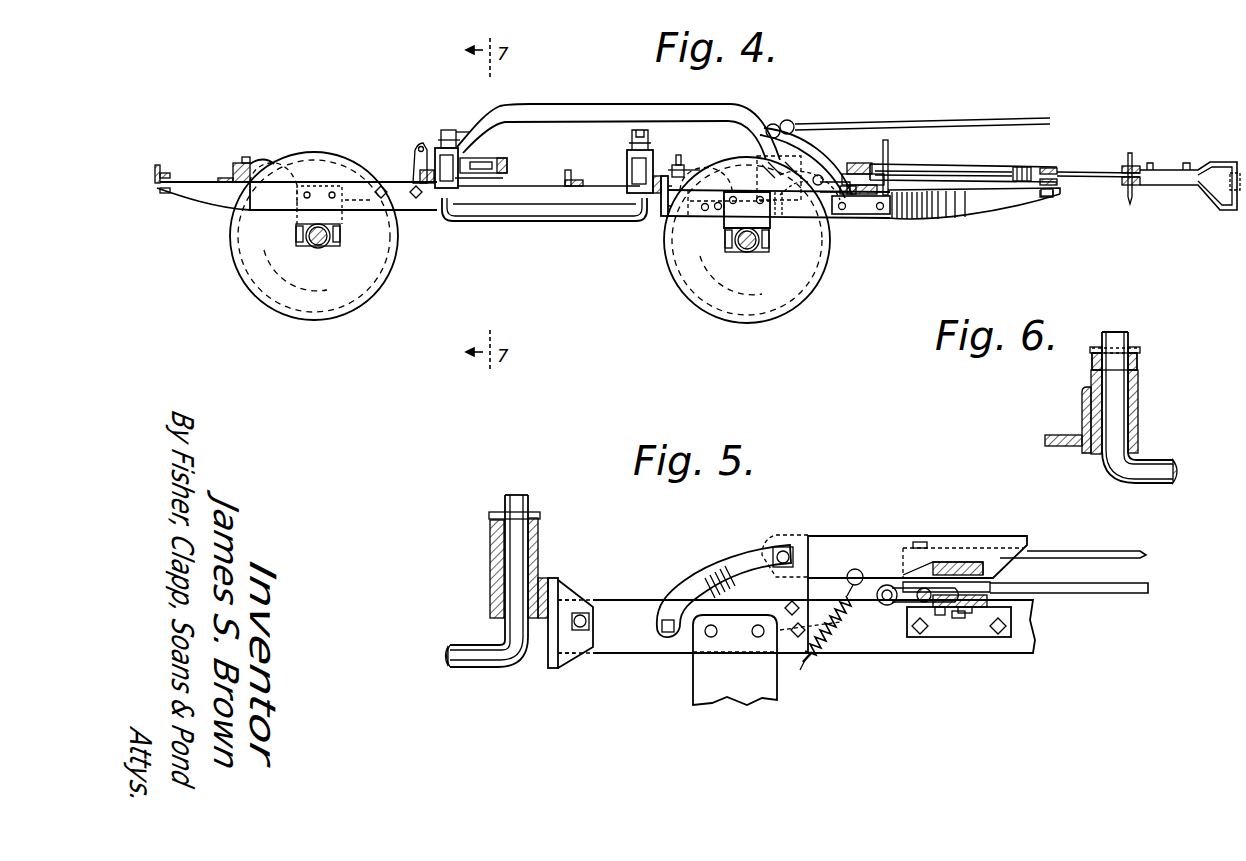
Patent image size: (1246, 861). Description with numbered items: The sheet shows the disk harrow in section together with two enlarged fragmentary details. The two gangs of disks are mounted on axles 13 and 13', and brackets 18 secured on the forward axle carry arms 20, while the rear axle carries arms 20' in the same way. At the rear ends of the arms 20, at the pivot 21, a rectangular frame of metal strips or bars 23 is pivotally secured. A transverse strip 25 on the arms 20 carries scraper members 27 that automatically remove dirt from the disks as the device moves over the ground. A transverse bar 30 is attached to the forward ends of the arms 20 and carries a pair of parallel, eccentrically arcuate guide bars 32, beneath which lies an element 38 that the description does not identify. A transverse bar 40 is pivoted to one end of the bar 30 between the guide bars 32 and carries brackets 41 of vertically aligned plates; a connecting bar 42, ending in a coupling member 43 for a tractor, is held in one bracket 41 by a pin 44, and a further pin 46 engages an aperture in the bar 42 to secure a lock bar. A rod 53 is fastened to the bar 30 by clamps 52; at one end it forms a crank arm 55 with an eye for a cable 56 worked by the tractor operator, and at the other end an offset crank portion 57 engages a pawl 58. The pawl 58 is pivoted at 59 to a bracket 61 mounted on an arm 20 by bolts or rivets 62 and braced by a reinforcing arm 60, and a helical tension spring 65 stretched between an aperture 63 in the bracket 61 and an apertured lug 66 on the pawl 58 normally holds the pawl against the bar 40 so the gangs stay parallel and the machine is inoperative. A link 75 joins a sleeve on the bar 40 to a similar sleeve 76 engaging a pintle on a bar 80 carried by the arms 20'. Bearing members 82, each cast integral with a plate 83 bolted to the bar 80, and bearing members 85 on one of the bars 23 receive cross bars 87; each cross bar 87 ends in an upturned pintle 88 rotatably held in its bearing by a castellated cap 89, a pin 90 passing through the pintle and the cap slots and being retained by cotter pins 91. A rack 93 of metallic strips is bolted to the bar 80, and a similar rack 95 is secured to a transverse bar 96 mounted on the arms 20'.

In FIG. 4, the axle 13 is at (747, 240).
In FIG. 4, the axle 13' is at (314, 236).
In FIG. 4, the brackets 18 is at (338, 214).
In FIG. 5, the arms 20 is at (796, 646).
In FIG. 4, the arms 20' is at (297, 213).
In FIG. 4, the pivot 21 is at (662, 214).
In FIG. 5, the pivot 21 is at (584, 614).
In FIG. 5, the metal strips or bars 23 is at (555, 670).
In FIG. 4, the transverse strip 25 is at (680, 165).
In FIG. 4, the scraper members 27 is at (262, 163).
In FIG. 4, the transverse bar 30 is at (868, 214).
In FIG. 5, the transverse bar 30 is at (975, 636).
In FIG. 4, the guide bars 32 is at (993, 164).
In FIG. 5, the guide bars 32 is at (1150, 560).
In FIG. 4, the guide member 38 is at (978, 206).
In FIG. 4, the transverse bar 40 is at (866, 166).
In FIG. 5, the transverse bar 40 is at (985, 590).
In FIG. 4, the brackets 41 is at (896, 166).
In FIG. 4, the connecting bar 42 is at (1083, 168).
In FIG. 4, the coupling member 43 is at (1218, 158).
In FIG. 4, the pin 44 is at (892, 156).
In FIG. 4, the pin 46 is at (1133, 162).
In FIG. 5, the clamps 52 is at (918, 606).
In FIG. 4, the rod 53 is at (848, 208).
In FIG. 5, the rod 53 is at (935, 638).
In FIG. 4, the crank arm 55 is at (800, 140).
In FIG. 4, the cable 56 is at (1016, 118).
In FIG. 5, the offset crank portion 57 is at (902, 590).
In FIG. 4, the pawl 58 is at (833, 160).
In FIG. 5, the pawl 58 is at (858, 542).
In FIG. 5, the pivot 59 is at (787, 548).
In FIG. 5, the reinforcing arm 60 is at (704, 582).
In FIG. 5, the bracket 61 is at (757, 590).
In FIG. 5, the bolts or rivets 62 is at (800, 656).
In FIG. 5, the aperture 63 is at (808, 664).
In FIG. 4, the helical tension spring 65 is at (794, 212).
In FIG. 5, the helical tension spring 65 is at (845, 625).
In FIG. 5, the apertured lug 66 is at (862, 572).
In FIG. 4, the link 75 is at (577, 100).
In FIG. 4, the sleeve 76 is at (413, 163).
In FIG. 4, the bar 80 is at (430, 196).
In FIG. 4, the bearing member 82 is at (480, 180).
In FIG. 6, the bearing member 82 is at (1138, 430).
In FIG. 6, the plate 83 is at (1083, 402).
In FIG. 4, the bearing member 85 is at (628, 160).
In FIG. 5, the bearing member 85 is at (490, 550).
In FIG. 4, the cross bar 87 is at (546, 200).
In FIG. 5, the cross bar 87 is at (474, 670).
In FIG. 6, the cross bar 87 is at (1178, 466).
In FIG. 5, the upturned pintle 88 is at (506, 622).
In FIG. 6, the upturned pintle 88 is at (1122, 332).
In FIG. 4, the cap 89 is at (441, 142).
In FIG. 5, the cap 89 is at (540, 520).
In FIG. 6, the cap 89 is at (1094, 362).
In FIG. 6, the pin 90 is at (1104, 348).
In FIG. 6, the cotter pins 91 is at (1092, 349).
In FIG. 4, the rack 93 is at (500, 164).
In FIG. 4, the rack 95 is at (160, 166).
In FIG. 4, the transverse bar 96 is at (248, 200).